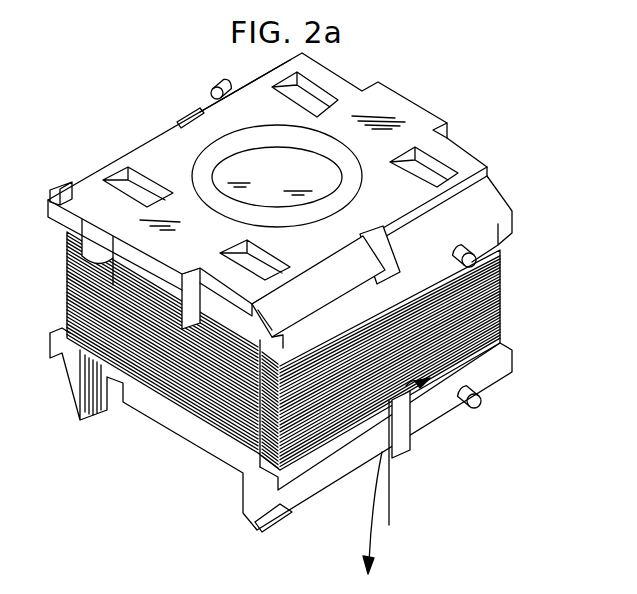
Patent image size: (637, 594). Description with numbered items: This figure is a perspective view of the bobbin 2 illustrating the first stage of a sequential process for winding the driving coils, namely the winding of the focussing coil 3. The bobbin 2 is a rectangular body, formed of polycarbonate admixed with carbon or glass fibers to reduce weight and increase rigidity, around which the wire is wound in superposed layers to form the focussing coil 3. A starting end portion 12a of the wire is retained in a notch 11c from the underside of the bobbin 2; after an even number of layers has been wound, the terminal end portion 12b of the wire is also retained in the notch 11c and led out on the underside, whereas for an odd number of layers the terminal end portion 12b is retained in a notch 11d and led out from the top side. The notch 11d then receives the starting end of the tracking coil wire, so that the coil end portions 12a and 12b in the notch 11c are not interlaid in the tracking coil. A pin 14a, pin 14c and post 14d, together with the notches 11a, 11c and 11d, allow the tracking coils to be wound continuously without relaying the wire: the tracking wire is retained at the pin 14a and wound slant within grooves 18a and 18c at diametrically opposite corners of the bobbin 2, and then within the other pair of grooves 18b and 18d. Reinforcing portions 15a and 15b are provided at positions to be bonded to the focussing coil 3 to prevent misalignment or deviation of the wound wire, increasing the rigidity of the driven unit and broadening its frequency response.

The bobbin 2 is at (387, 105).
The focussing coil 3 is at (490, 291).
The notch 11a is at (185, 118).
The notch 11c is at (400, 453).
The notch 11d is at (386, 244).
The starting end portion of the wire 12a is at (392, 502).
The terminal end portion of the wire 12b is at (382, 544).
The pin 14a is at (212, 88).
The pin 14c is at (488, 397).
The post 14d is at (488, 257).
The reinforcing portion 15a is at (428, 105).
The reinforcing portion 15b is at (108, 265).
The groove 18a is at (60, 190).
The groove 18b is at (68, 405).
The groove 18c is at (284, 508).
The groove 18d is at (313, 292).